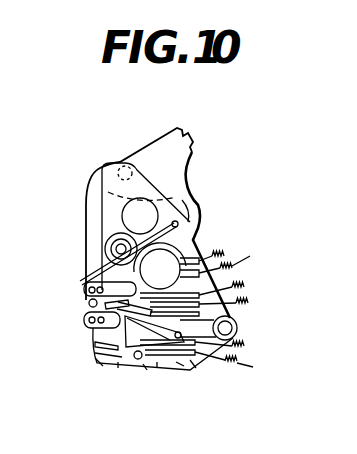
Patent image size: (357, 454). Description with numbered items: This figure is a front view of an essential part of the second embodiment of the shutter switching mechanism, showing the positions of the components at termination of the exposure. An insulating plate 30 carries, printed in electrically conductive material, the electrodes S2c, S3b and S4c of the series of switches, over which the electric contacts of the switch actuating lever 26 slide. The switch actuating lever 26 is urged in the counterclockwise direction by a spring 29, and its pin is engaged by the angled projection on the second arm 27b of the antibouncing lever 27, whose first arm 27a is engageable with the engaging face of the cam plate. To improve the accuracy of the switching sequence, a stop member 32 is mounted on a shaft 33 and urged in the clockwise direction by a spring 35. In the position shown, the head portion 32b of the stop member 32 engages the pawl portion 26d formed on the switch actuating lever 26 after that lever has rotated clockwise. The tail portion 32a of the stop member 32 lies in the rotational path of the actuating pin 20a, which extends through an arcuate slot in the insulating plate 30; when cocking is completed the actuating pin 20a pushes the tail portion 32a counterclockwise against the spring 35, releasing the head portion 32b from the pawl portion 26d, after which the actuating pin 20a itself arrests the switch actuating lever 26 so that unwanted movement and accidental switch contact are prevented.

The antibouncing lever 27 is at (190, 168).
The first arm 27a is at (200, 213).
The spring 29 is at (83, 268).
The switch actuating lever 26 is at (83, 293).
The second arm 27b is at (85, 320).
The pawl portion 26d is at (94, 341).
The head portion 32b is at (98, 373).
The stop member 32 is at (107, 365).
The spring 35 is at (127, 372).
The shaft 33 is at (143, 372).
The insulating plate 30 is at (180, 364).
The tail portion 32a is at (193, 370).
The actuating pin 20a is at (245, 367).
The electrodes of switch S3 S3b is at (224, 254).
The electrodes of switch S4 S4c is at (244, 286).
The electrodes of switch S2 S2c is at (244, 345).